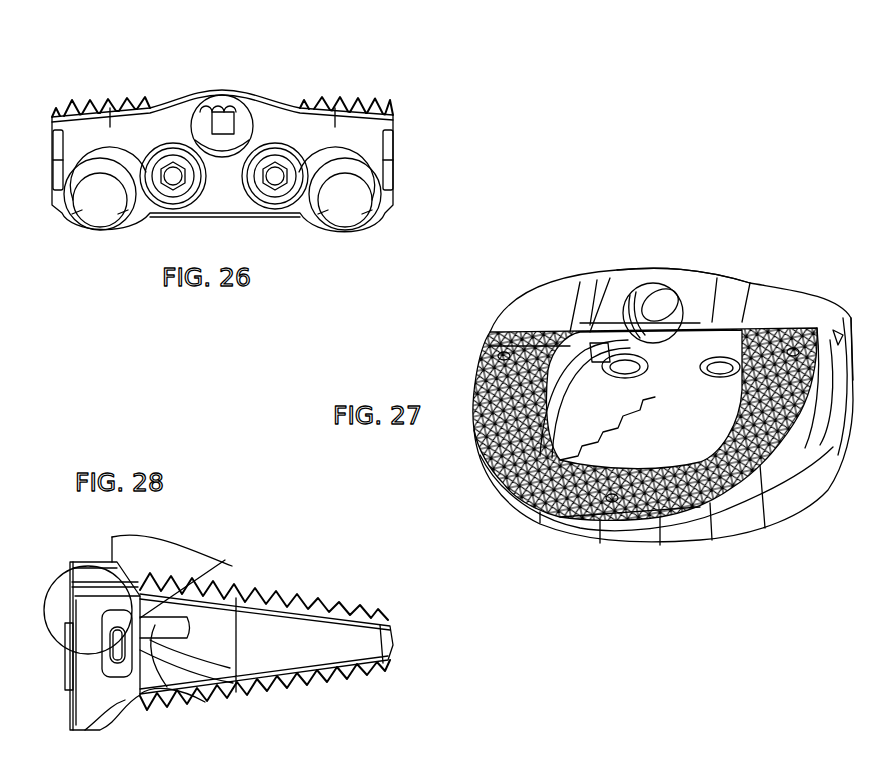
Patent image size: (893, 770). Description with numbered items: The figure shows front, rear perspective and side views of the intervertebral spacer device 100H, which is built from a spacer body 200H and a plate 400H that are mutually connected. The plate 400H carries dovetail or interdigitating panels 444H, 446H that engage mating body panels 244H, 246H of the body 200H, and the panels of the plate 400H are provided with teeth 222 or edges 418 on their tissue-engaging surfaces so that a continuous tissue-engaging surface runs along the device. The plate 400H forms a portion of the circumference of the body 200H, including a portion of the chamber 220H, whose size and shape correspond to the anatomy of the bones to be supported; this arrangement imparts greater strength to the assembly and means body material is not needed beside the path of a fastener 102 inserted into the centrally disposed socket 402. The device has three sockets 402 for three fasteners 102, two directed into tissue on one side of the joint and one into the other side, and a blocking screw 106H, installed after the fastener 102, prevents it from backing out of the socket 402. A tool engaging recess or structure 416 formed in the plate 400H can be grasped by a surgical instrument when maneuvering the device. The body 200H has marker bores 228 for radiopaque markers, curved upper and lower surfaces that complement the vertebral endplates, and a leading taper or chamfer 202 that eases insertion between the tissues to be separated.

In FIG. 26, the device 100H is at (422, 185).
In FIG. 27, the device 100H is at (650, 232).
In FIG. 28, the device 100H is at (282, 543).
In FIG. 28, the fastener 102 is at (150, 553).
In FIG. 26, the blocking screw 106H is at (277, 214).
In FIG. 28, the body 200H is at (304, 575).
In FIG. 27, the leading taper or chamfer 202 is at (657, 562).
In FIG. 27, the chamber 220H is at (672, 426).
In FIG. 26, the teeth 222 is at (372, 108).
In FIG. 27, the teeth 222 is at (668, 512).
In FIG. 27, the marker bores 228 is at (596, 511).
In FIG. 27, the body panel 244H is at (828, 340).
In FIG. 28, the body panel 244H is at (160, 597).
In FIG. 28, the body panel 246H is at (173, 647).
In FIG. 26, the plate 400H is at (488, 303).
In FIG. 26, the socket 402 is at (352, 199).
In FIG. 27, the socket 402 is at (652, 290).
In FIG. 26, the tool engaging recess or structure 416 is at (402, 159).
In FIG. 28, the tool engaging recess or structure 416 is at (98, 612).
In FIG. 27, the edges 418 is at (690, 382).
In FIG. 26, the panel 444H is at (103, 195).
In FIG. 27, the panel 444H is at (847, 305).
In FIG. 28, the panel 444H is at (260, 700).
In FIG. 28, the panel 446H is at (152, 685).